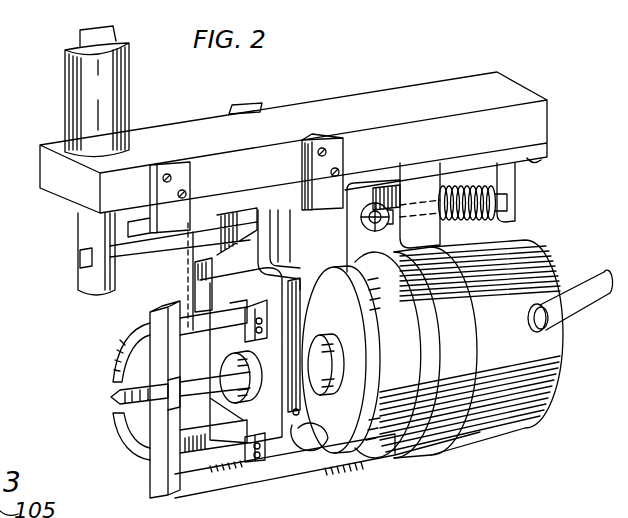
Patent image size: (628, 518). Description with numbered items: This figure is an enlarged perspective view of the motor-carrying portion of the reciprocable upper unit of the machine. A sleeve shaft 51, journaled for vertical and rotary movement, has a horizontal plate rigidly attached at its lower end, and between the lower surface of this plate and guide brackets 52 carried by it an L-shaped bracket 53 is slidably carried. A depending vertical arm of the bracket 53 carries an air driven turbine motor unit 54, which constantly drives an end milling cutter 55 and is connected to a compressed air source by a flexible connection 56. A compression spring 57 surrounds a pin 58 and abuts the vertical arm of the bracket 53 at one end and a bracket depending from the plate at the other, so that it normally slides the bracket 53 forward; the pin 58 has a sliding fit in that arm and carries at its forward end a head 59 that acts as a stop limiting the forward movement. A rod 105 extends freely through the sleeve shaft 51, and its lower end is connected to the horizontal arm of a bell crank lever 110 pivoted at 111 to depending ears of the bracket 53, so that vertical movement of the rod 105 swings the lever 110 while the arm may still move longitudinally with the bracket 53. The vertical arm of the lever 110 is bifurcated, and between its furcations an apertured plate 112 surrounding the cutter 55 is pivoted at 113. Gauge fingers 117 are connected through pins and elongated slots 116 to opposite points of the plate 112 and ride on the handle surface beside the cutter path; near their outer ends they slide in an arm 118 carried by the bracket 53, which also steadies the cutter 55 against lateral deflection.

The sleeve shaft 51 is at (76, 78).
The guide brackets 52 is at (258, 108).
The L-shaped bracket 53 is at (362, 178).
The air driven turbine motor unit 54 is at (577, 232).
The end milling cutter 55 is at (110, 398).
The flexible connection 56 is at (578, 287).
The compression spring 57 is at (464, 187).
The pin 58 is at (416, 200).
The head 59 is at (361, 220).
The rod 105 is at (92, 233).
The bell crank lever 110 is at (242, 270).
The pivot 111 is at (338, 234).
The apertured plate 112 is at (276, 445).
The pivot 113 is at (318, 460).
The pins and elongated slots 116 is at (262, 320).
The gauge fingers 117 is at (150, 321).
The arm 118 is at (152, 478).